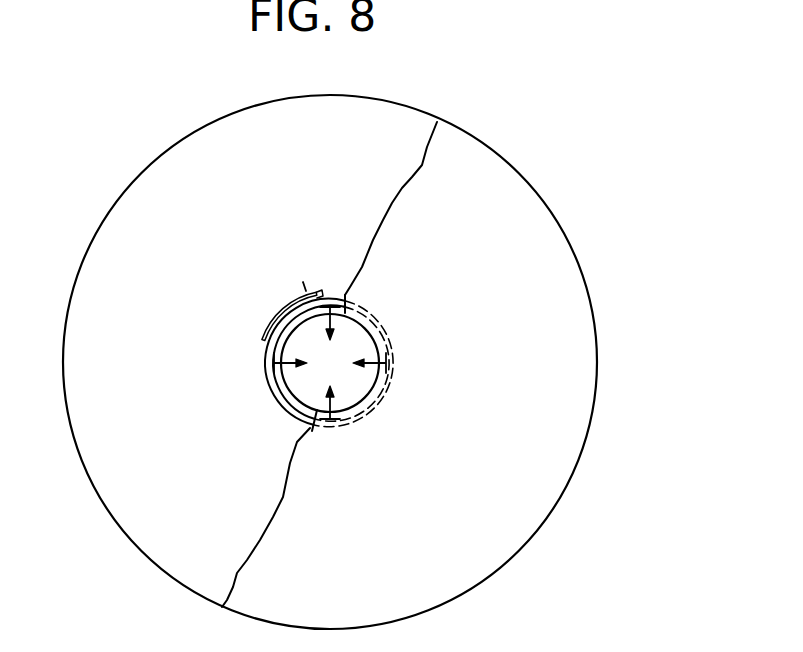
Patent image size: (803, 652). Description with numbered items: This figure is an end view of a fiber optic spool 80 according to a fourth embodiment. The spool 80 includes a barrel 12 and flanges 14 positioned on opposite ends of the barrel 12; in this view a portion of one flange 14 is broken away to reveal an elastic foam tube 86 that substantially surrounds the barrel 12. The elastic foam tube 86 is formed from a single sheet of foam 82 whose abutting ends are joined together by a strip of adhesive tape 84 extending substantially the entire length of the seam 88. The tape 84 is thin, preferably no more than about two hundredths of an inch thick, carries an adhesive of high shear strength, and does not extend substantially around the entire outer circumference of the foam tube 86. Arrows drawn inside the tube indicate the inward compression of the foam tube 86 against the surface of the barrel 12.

The fiber optic spool 80 is at (620, 227).
The flange 14 is at (212, 140).
The barrel 12 is at (275, 411).
The sheet of foam 82 is at (264, 373).
The strip of adhesive tape 84 is at (318, 290).
The elastic foam tube 86 is at (303, 280).
The seam 88 is at (293, 297).